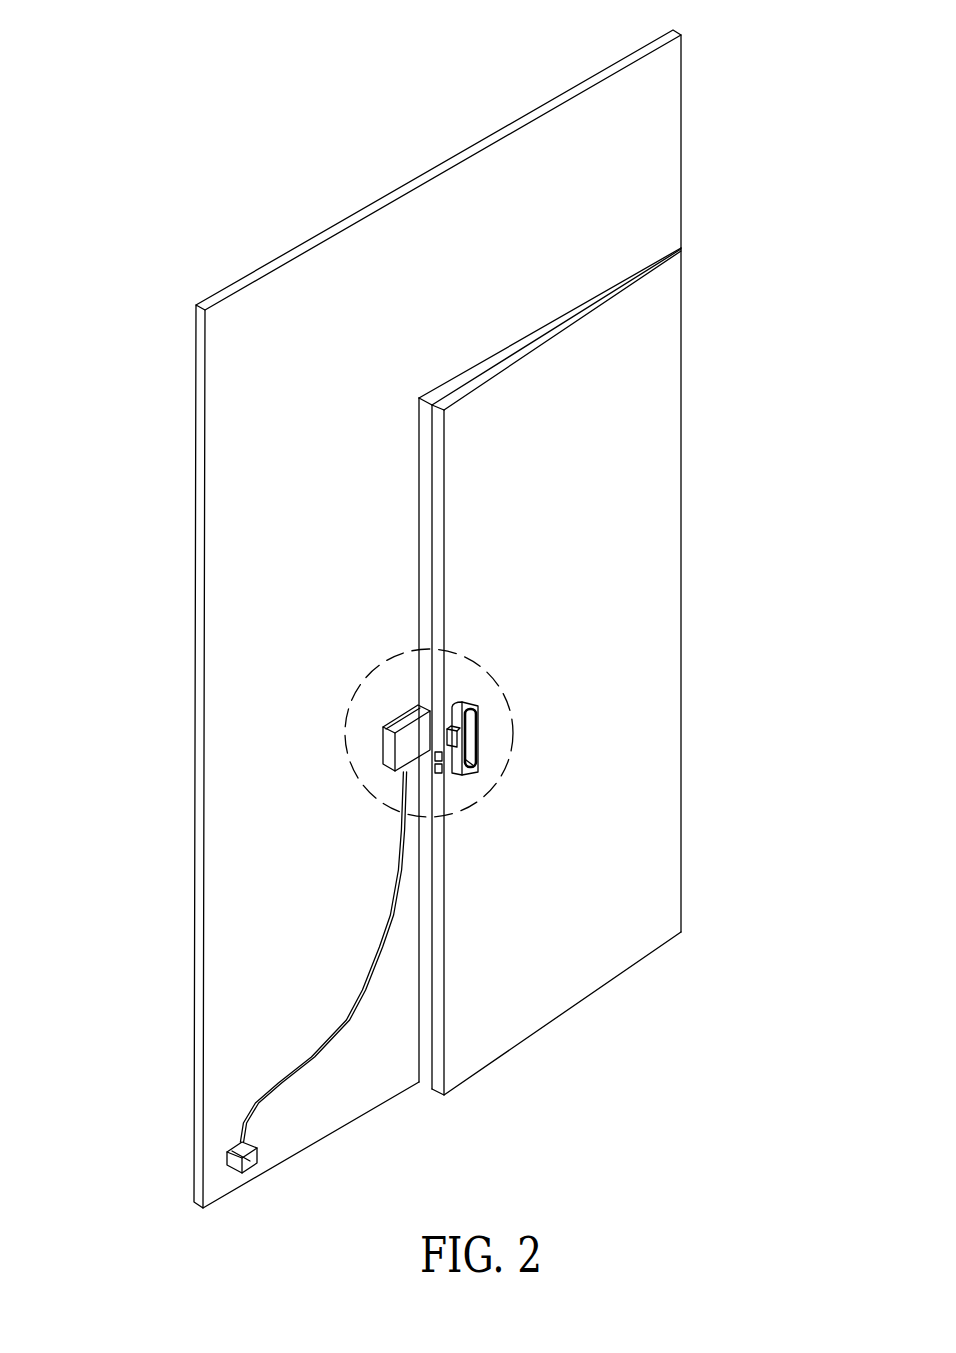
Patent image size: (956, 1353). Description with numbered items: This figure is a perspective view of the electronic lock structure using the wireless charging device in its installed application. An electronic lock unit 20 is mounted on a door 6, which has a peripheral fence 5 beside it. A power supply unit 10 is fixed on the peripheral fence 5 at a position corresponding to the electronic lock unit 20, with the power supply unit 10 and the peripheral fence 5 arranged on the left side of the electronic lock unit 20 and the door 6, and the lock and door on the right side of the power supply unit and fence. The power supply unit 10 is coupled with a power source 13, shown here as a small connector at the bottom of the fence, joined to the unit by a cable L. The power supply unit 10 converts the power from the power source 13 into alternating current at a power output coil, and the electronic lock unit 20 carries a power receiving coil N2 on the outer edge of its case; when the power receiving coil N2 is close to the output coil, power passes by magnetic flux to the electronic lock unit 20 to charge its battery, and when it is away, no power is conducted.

The peripheral fence 5 is at (415, 257).
The door 6 is at (492, 418).
The power supply unit 10 is at (412, 737).
The electronic lock unit 20 is at (473, 710).
The power receiving coil N2 is at (452, 713).
The cable L is at (398, 872).
The power source 13 is at (228, 1150).